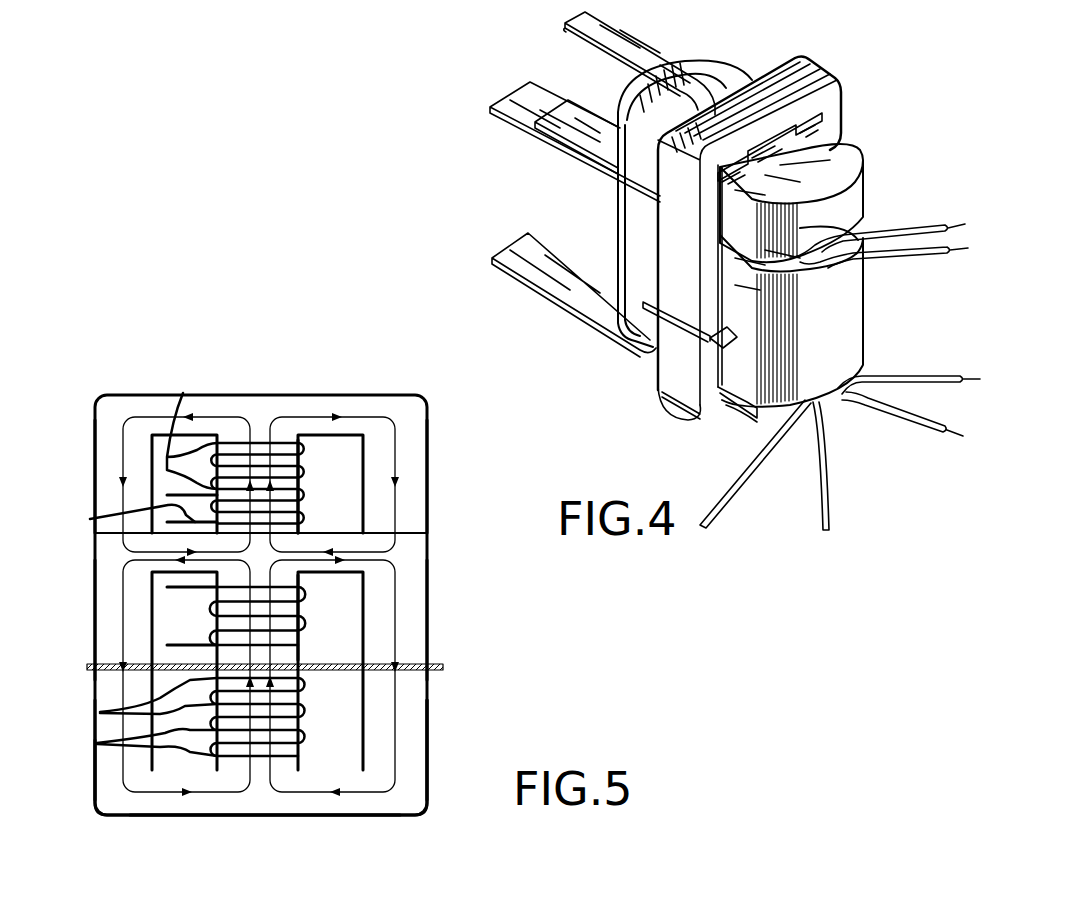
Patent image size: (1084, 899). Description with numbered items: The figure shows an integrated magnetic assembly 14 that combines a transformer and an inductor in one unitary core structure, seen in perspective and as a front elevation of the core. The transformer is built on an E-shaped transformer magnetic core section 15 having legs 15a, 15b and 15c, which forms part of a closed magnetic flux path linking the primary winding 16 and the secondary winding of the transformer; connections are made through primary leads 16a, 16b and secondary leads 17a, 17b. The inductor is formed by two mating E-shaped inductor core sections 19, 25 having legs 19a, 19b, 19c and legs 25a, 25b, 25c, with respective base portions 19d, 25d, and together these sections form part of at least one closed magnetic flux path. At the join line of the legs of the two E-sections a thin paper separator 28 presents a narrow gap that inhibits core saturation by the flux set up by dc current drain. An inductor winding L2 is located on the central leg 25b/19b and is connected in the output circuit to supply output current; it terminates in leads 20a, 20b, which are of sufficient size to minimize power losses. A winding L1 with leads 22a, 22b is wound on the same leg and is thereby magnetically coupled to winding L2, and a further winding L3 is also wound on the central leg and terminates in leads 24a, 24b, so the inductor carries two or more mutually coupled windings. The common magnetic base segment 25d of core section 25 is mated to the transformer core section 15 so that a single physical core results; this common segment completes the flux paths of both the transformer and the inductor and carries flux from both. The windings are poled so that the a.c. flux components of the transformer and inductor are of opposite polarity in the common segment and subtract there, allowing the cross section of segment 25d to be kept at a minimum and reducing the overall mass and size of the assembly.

In FIG. 5, the magnetic assembly 14 is at (429, 698).
In FIG. 4, the magnetic assembly 14 is at (801, 58).
In FIG. 5, the transformer magnetic core section 15 is at (278, 419).
In FIG. 4, the transformer magnetic core section 15 is at (780, 145).
In FIG. 5, the leg 15a is at (96, 463).
In FIG. 5, the leg 15b is at (300, 528).
In FIG. 5, the leg 15c is at (427, 481).
In FIG. 5, the primary winding 16 is at (303, 471).
In FIG. 5, the primary leads 16a is at (187, 429).
In FIG. 4, the primary leads 16a is at (898, 264).
In FIG. 4, the primary coil lead 16b is at (905, 230).
In FIG. 5, the secondary leads 17a is at (131, 513).
In FIG. 4, the secondary leads 17a is at (626, 46).
In FIG. 4, the primary terminal 17b is at (575, 122).
In FIG. 5, the inductor core section 19 is at (151, 816).
In FIG. 4, the inductor core section 19 is at (718, 413).
In FIG. 5, the leg 19a is at (103, 765).
In FIG. 5, the leg 19b is at (302, 753).
In FIG. 5, the leg 19c is at (427, 722).
In FIG. 5, the base portion 19d is at (280, 811).
In FIG. 5, the leads 20a is at (181, 607).
In FIG. 4, the leads 20a is at (510, 112).
In FIG. 4, the secondary terminal 20b is at (498, 258).
In FIG. 5, the leads 22a is at (132, 700).
In FIG. 4, the leads 22a is at (936, 362).
In FIG. 4, the secondary coil lead 22b is at (927, 427).
In FIG. 5, the leads 24a is at (132, 742).
In FIG. 4, the leads 24a is at (829, 510).
In FIG. 4, the tertiary coil lead 24b is at (724, 517).
In FIG. 5, the inductor core section 25 is at (94, 578).
In FIG. 4, the inductor core section 25 is at (713, 246).
In FIG. 5, the leg 25a is at (99, 631).
In FIG. 5, the leg 25b is at (300, 655).
In FIG. 5, the leg 25c is at (427, 618).
In FIG. 5, the base portion 25d is at (274, 561).
In FIG. 5, the paper separator 28 is at (445, 667).
In FIG. 4, the paper separator 28 is at (706, 344).
In FIG. 5, the winding L1 is at (304, 687).
In FIG. 5, the inductor winding L2 is at (304, 609).
In FIG. 5, the winding L3 is at (304, 729).